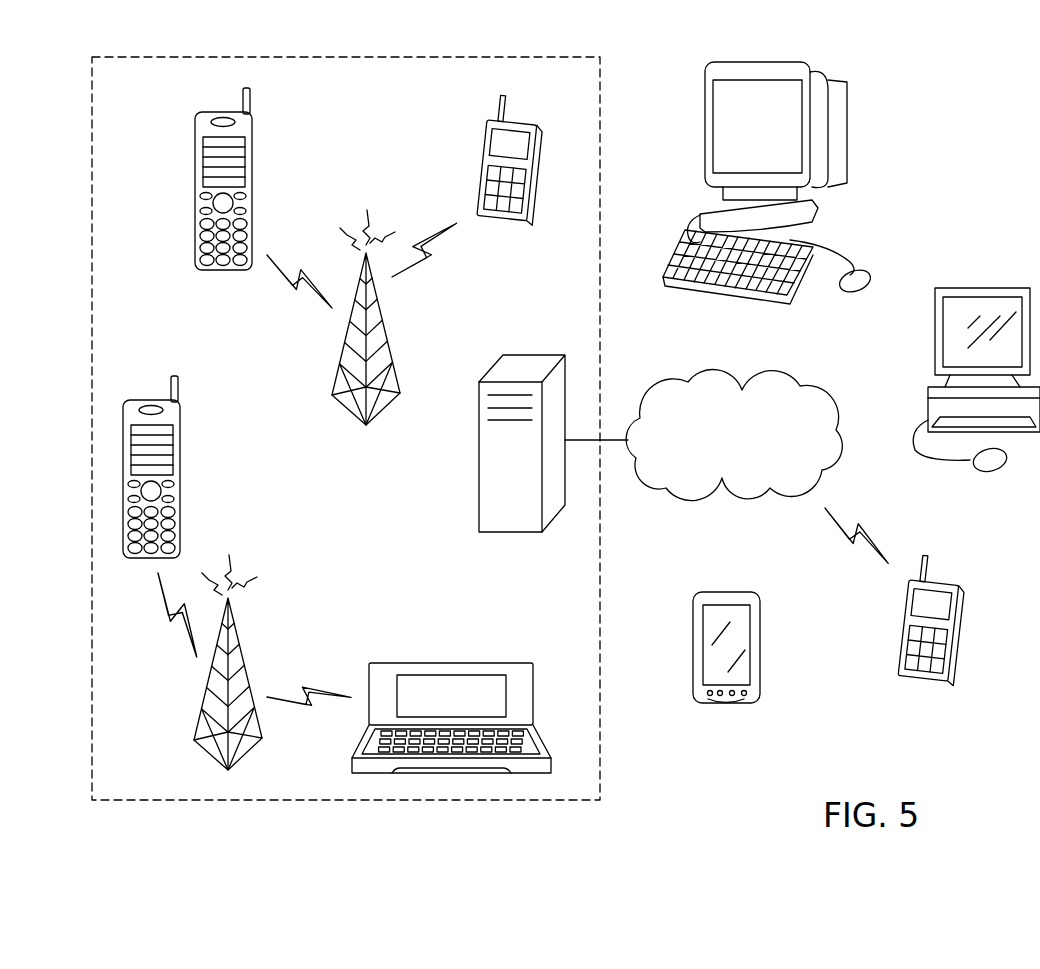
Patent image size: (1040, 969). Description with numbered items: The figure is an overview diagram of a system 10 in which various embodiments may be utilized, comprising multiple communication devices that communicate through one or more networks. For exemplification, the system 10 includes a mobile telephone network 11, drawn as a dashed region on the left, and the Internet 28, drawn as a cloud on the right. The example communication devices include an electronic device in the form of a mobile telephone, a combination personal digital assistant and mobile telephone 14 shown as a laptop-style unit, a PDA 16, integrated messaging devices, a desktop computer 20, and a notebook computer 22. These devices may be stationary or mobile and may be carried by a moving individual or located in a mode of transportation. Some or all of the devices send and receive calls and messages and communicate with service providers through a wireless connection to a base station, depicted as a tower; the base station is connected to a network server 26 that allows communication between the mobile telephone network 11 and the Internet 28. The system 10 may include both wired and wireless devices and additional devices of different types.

The system 10 is at (1025, 537).
The mobile telephone network 11 is at (132, 99).
The combination personal digital assistant and mobile telephone 14 is at (452, 665).
The PDA 16 is at (760, 645).
The desktop computer 20 is at (847, 117).
The notebook computer 22 is at (985, 288).
The network server 26 is at (479, 457).
The Internet 28 is at (770, 372).